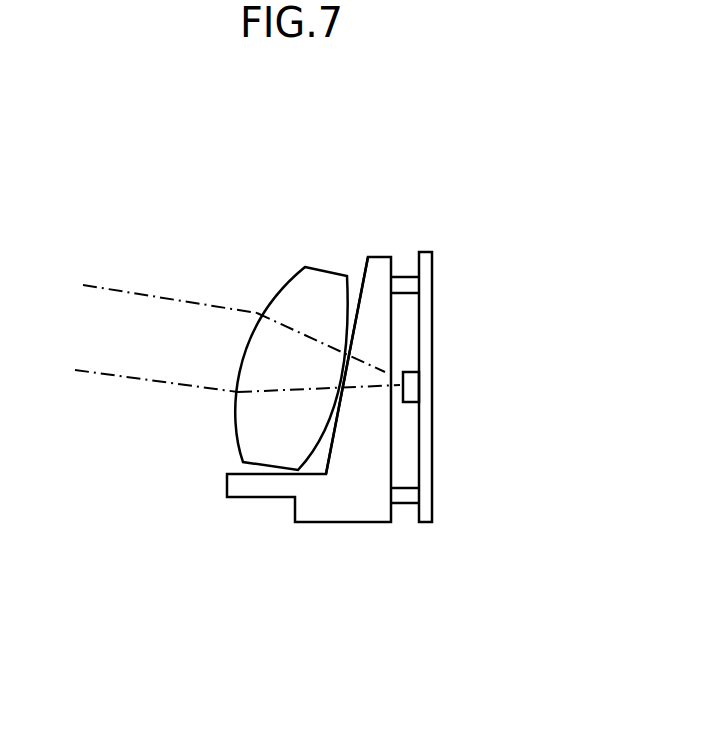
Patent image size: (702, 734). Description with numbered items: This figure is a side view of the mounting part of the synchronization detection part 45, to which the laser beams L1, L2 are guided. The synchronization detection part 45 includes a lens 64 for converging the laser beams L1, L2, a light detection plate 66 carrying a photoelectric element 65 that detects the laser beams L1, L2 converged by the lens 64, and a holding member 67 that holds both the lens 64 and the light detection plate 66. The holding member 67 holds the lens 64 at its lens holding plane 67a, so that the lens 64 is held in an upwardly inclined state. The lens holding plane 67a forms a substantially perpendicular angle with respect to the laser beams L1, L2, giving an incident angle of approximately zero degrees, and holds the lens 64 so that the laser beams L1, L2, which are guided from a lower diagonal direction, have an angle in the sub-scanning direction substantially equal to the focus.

The laser beam L1 is at (127, 292).
The laser beam L2 is at (122, 377).
The synchronization detection part 45 is at (428, 240).
The lens 64 is at (292, 293).
The photoelectric element 65 is at (415, 388).
The light detection plate 66 is at (427, 323).
The holding member 67 is at (350, 503).
The lens holding plane 67a is at (362, 272).